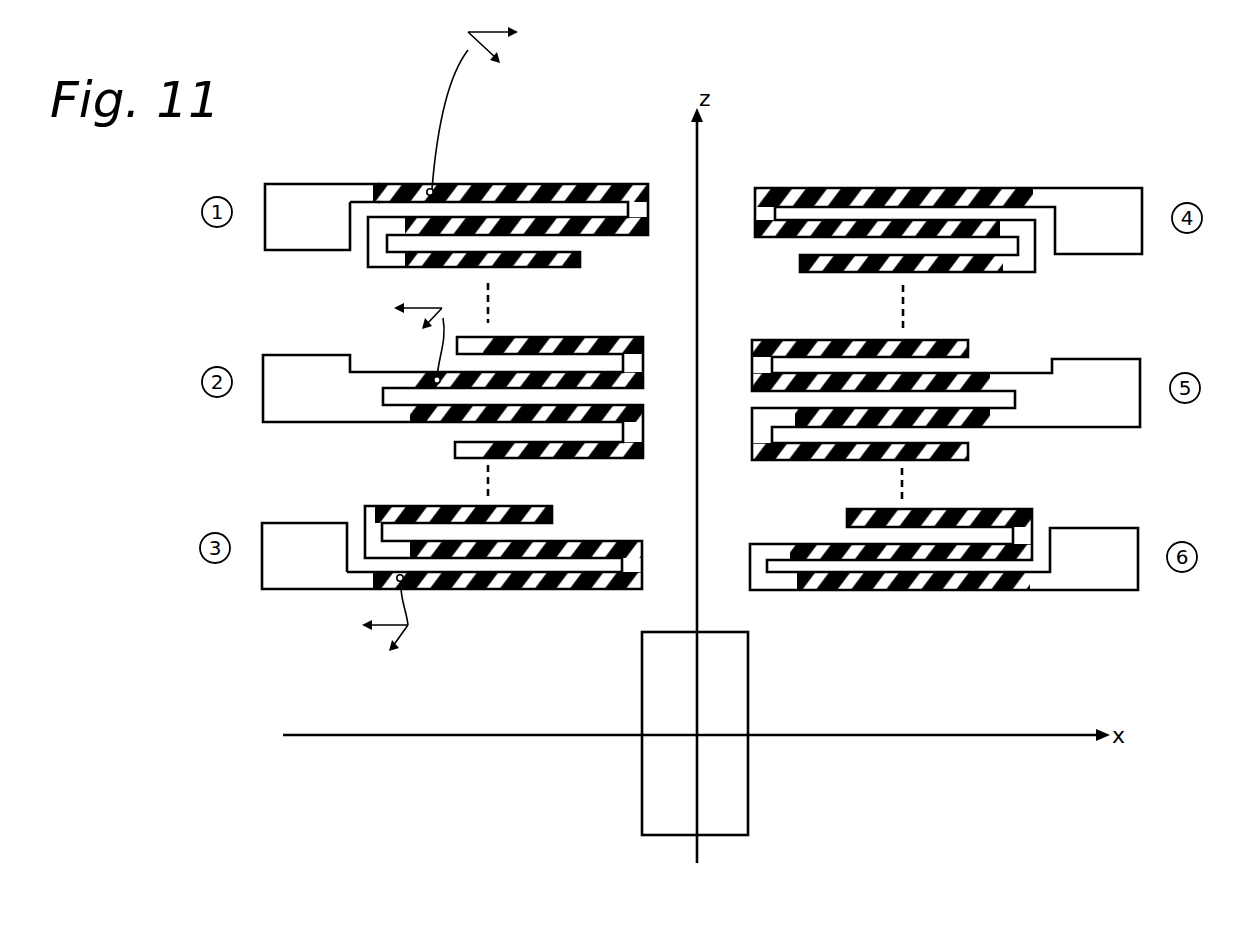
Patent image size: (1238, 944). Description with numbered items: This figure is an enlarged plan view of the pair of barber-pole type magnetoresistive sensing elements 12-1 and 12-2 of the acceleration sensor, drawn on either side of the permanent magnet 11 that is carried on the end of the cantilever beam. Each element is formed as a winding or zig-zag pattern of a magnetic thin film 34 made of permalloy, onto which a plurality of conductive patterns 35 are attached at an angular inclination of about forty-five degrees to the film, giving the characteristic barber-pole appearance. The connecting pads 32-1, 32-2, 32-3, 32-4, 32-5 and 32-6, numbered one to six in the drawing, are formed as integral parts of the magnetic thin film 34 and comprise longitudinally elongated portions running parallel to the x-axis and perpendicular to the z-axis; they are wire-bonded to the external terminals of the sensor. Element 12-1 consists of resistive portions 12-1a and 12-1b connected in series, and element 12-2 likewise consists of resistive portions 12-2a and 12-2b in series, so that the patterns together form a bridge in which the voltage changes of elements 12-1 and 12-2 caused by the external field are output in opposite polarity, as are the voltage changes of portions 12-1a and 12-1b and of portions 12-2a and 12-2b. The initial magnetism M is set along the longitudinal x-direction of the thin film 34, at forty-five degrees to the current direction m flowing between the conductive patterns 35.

The permanent magnet 11 is at (748, 792).
The magnetoresistive sensing element 12-1 is at (450, 344).
The resistive portion 12-1a is at (450, 158).
The resistive portion 12-1b is at (452, 570).
The magnetoresistive sensing element 12-2 is at (953, 378).
The resistive portion 12-2a is at (955, 213).
The resistive portion 12-2b is at (944, 570).
The connecting pad 32-1 is at (309, 196).
The connecting pad 32-2 is at (313, 368).
The connecting pad 32-3 is at (305, 533).
The connecting pad 32-4 is at (1107, 207).
The connecting pad 32-5 is at (1097, 380).
The connecting pad 32-6 is at (1095, 540).
The magnetic thin film 34 is at (362, 185).
The conductive patterns 35 is at (390, 185).